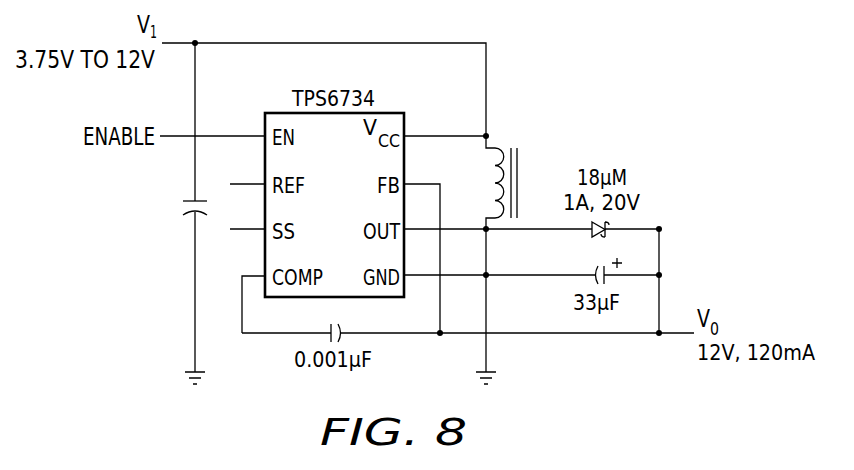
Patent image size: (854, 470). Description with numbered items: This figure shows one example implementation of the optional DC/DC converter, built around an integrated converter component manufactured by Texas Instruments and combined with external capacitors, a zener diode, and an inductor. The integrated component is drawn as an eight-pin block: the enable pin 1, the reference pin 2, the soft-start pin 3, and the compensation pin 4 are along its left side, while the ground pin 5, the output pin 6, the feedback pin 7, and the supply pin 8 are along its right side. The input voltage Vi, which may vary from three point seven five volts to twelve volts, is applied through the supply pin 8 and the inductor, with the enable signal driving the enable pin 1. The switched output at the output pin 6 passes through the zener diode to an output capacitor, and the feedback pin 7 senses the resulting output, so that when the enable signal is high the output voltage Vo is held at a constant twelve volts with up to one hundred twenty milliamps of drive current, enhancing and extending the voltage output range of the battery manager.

The pin 1 EN (enable input) 1 is at (212, 122).
The pin 2 REF (reference) 2 is at (247, 171).
The pin 3 SS (soft start) 3 is at (247, 216).
The pin 4 COMP (compensation) 4 is at (253, 291).
The pin 5 GND (ground) 5 is at (531, 262).
The pin 6 OUT (switch output) 6 is at (531, 216).
The pin 7 FB (feedback) 7 is at (422, 245).
The pin 8 VCC (supply) 8 is at (445, 122).